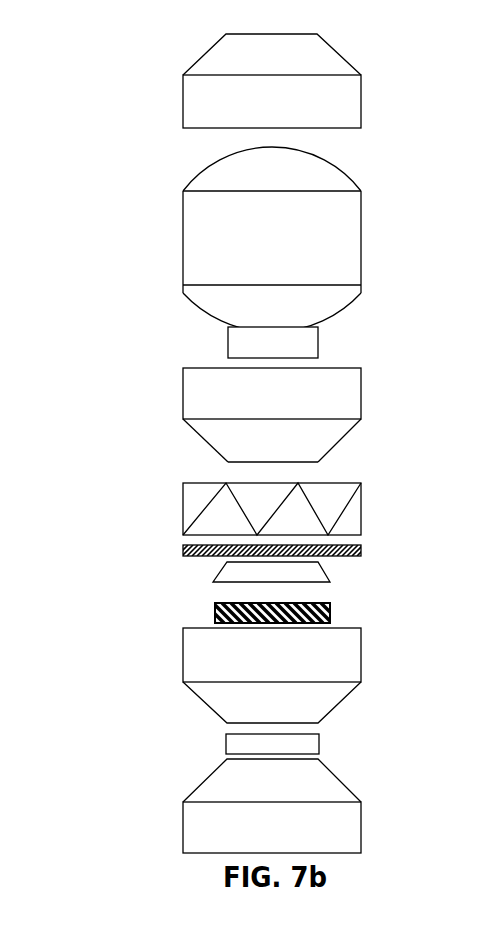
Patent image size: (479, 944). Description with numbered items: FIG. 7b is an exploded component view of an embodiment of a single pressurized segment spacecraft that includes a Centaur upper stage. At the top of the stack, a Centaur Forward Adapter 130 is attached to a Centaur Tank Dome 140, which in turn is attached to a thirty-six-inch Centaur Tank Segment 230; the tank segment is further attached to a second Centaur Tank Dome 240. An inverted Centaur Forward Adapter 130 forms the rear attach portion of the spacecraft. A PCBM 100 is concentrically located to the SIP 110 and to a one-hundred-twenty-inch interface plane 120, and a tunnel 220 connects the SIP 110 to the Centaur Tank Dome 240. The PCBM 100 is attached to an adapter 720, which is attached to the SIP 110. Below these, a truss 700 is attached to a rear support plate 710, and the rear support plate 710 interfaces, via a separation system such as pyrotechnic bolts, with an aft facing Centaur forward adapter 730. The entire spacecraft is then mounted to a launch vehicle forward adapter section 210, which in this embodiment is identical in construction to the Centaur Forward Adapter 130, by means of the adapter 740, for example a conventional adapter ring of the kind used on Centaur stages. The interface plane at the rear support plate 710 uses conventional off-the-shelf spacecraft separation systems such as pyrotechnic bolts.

The Centaur Forward Adapter 130 is at (226, 86).
The Centaur Tank Dome 140 is at (257, 180).
The Centaur Tank Segment 230 is at (246, 243).
The Centaur Tank Dome 240 is at (236, 294).
The tunnel 220 is at (318, 335).
The 120-inch interface plane 120 is at (183, 420).
The SIP 110 is at (252, 462).
The truss 700 is at (183, 504).
The rear support plate 710 is at (183, 546).
The adapter 720 is at (222, 575).
The PCBM 100 is at (213, 610).
The aft facing Centaur forward adapter 730 is at (183, 670).
The adapter 740 is at (226, 743).
The launch vehicle forward adapter section 210 is at (268, 791).